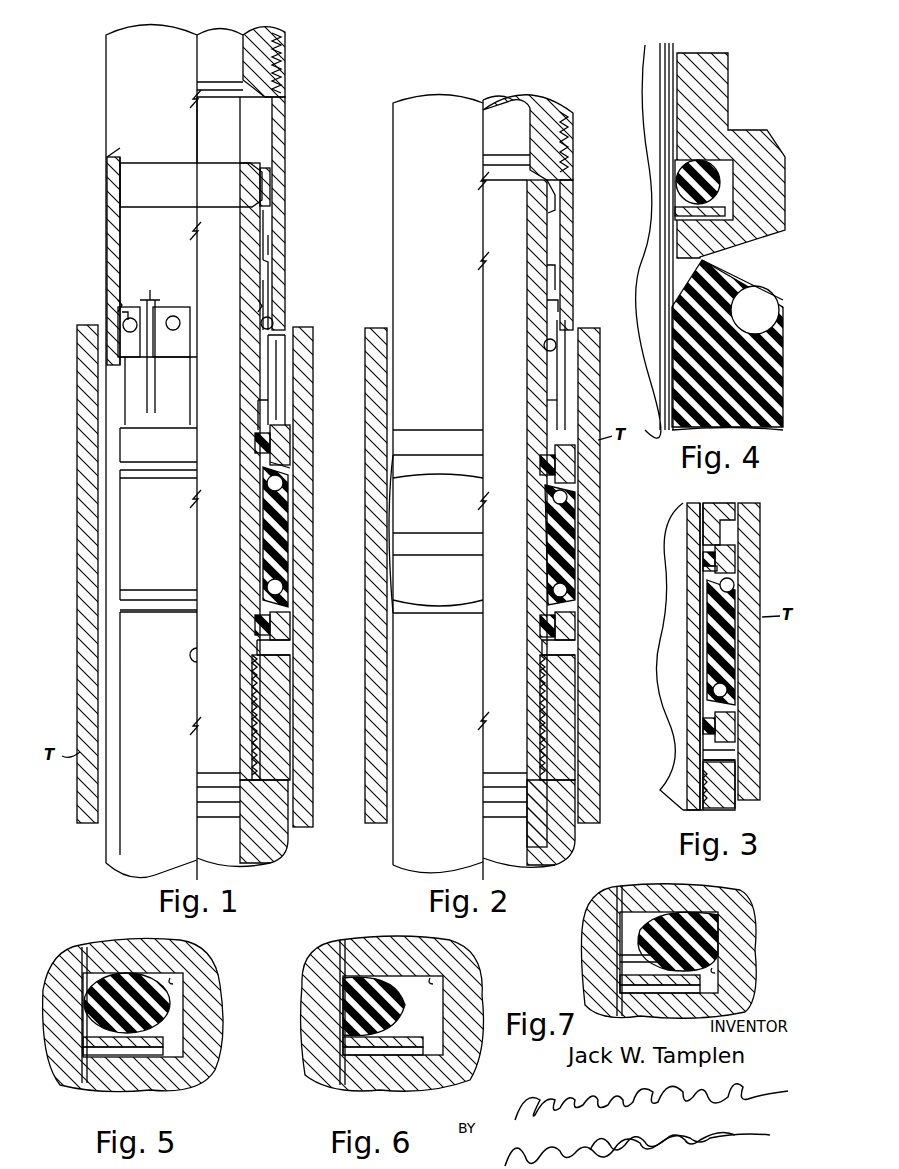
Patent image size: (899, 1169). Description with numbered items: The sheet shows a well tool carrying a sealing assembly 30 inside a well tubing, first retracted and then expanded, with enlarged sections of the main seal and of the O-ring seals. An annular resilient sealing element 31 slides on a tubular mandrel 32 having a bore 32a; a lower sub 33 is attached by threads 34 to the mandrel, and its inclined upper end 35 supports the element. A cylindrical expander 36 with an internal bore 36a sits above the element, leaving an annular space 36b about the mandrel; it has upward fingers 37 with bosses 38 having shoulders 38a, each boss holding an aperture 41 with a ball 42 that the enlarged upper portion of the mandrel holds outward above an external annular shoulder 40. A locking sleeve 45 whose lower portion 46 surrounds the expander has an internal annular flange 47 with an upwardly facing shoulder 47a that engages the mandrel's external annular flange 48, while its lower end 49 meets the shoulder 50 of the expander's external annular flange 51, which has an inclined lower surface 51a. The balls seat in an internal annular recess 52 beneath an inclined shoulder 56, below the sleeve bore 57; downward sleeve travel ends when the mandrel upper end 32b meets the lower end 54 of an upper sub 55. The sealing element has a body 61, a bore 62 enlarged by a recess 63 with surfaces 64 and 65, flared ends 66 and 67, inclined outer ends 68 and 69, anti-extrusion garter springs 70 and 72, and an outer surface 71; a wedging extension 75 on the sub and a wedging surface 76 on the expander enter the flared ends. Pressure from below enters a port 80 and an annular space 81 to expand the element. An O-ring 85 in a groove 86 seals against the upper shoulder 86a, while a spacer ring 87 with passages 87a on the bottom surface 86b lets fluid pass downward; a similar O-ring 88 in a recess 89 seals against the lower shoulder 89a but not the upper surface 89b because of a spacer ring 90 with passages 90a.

In FIG. 1, the sealing assembly 30 is at (70, 285).
In FIG. 2, the sealing element 31 is at (575, 530).
In FIG. 4, the sealing element 31 is at (770, 370).
In FIG. 3, the sealing element 31 is at (740, 648).
In FIG. 1, the tubular mandrel 32 is at (240, 551).
In FIG. 2, the tubular mandrel 32 is at (529, 523).
In FIG. 3, the tubular mandrel 32 is at (690, 600).
In FIG. 5, the tubular mandrel 32 is at (65, 958).
In FIG. 6, the tubular mandrel 32 is at (322, 950).
In FIG. 7, the tubular mandrel 32 is at (590, 926).
In FIG. 1, the bore 32a is at (230, 170).
In FIG. 1, the upper end of mandrel 32b is at (262, 150).
In FIG. 2, the upper end of mandrel 32b is at (505, 165).
In FIG. 2, the lower sub 33 is at (400, 846).
In FIG. 1, the threads 34 is at (262, 730).
In FIG. 2, the threads 34 is at (550, 730).
In FIG. 1, the upper end of lower sub 35 is at (290, 605).
In FIG. 2, the upper end of lower sub 35 is at (572, 610).
In FIG. 3, the upper end of lower sub 35 is at (735, 695).
In FIG. 1, the expander 36 is at (270, 410).
In FIG. 2, the expander 36 is at (572, 410).
In FIG. 4, the expander 36 is at (720, 70).
In FIG. 3, the expander 36 is at (719, 524).
In FIG. 1, the internal bore of expander 36a is at (278, 395).
In FIG. 4, the internal bore of expander 36a is at (677, 110).
In FIG. 1, the annular space 36b is at (150, 300).
In FIG. 4, the annular space 36b is at (677, 88).
In FIG. 3, the annular space 36b is at (701, 505).
In FIG. 5, the annular space 36b is at (86, 945).
In FIG. 6, the annular space 36b is at (344, 940).
In FIG. 7, the annular space 36b is at (622, 888).
In FIG. 1, the fingers 37 is at (125, 388).
In FIG. 1, the bosses 38 is at (118, 340).
In FIG. 1, the shoulders 38a is at (178, 358).
In FIG. 2, the shoulders 38a is at (572, 385).
In FIG. 1, the external annular shoulder 40 is at (290, 338).
In FIG. 1, the aperture 41 is at (270, 306).
In FIG. 1, the ball 42 is at (274, 320).
In FIG. 2, the ball 42 is at (544, 345).
In FIG. 1, the locking sleeve 45 is at (286, 212).
In FIG. 2, the locking sleeve 45 is at (398, 280).
In FIG. 1, the lower portion of locking sleeve 46 is at (118, 219).
In FIG. 1, the internal annular flange 47 is at (270, 224).
In FIG. 1, the upwardly facing shoulder 47a is at (268, 200).
In FIG. 2, the upwardly facing shoulder 47a is at (556, 280).
In FIG. 1, the external annular flange 48 is at (272, 172).
In FIG. 2, the external annular flange 48 is at (560, 190).
In FIG. 1, the lower end of locking sleeve 49 is at (282, 370).
In FIG. 2, the lower end of locking sleeve 49 is at (575, 438).
In FIG. 1, the upwardly facing shoulder 50 is at (280, 428).
In FIG. 4, the upwardly facing shoulder 50 is at (740, 132).
In FIG. 1, the external annular flange 51 is at (292, 440).
In FIG. 2, the external annular flange 51 is at (578, 462).
In FIG. 4, the external annular flange 51 is at (790, 160).
In FIG. 3, the external annular flange 51 is at (735, 540).
In FIG. 1, the lower surface of expander 51a is at (285, 462).
In FIG. 2, the lower surface of expander 51a is at (575, 488).
In FIG. 4, the lower surface of expander 51a is at (760, 240).
In FIG. 3, the lower surface of expander 51a is at (740, 578).
In FIG. 1, the internal annular recess 52 is at (118, 322).
In FIG. 1, the lower end of upper sub 54 is at (285, 96).
In FIG. 2, the lower end of upper sub 54 is at (483, 170).
In FIG. 1, the upper sub 55 is at (283, 60).
In FIG. 2, the upper sub 55 is at (573, 120).
In FIG. 1, the inclined shoulder 56 is at (112, 312).
In FIG. 2, the inclined shoulder 56 is at (560, 305).
In FIG. 1, the bore of locking sleeve 57 is at (268, 252).
In FIG. 1, the body 61 is at (327, 520).
In FIG. 1, the bore of sealing element 62 is at (258, 584).
In FIG. 2, the bore of sealing element 62 is at (540, 585).
In FIG. 1, the internal annular recess 63 is at (258, 530).
In FIG. 2, the internal annular recess 63 is at (545, 548).
In FIG. 1, the upper surface of recess 64 is at (258, 510).
In FIG. 4, the upper surface of recess 64 is at (675, 420).
In FIG. 1, the lower surface of recess 65 is at (260, 562).
In FIG. 1, the flared upper end of bore 66 is at (258, 484).
In FIG. 4, the flared upper end of bore 66 is at (700, 262).
In FIG. 1, the flared lower end of bore 67 is at (258, 600).
In FIG. 1, the inclined upper end 68 is at (290, 476).
In FIG. 4, the inclined upper end 68 is at (735, 265).
In FIG. 1, the inclined lower end 69 is at (284, 587).
In FIG. 1, the anti-extrusion element 70 is at (283, 485).
In FIG. 4, the anti-extrusion element 70 is at (772, 295).
In FIG. 3, the anti-extrusion element 70 is at (735, 587).
In FIG. 1, the outer surface 71 is at (290, 500).
In FIG. 1, the anti-extrusion element 72 is at (290, 575).
In FIG. 1, the wedging extension 75 is at (255, 618).
In FIG. 1, the wedging surface 76 is at (262, 472).
In FIG. 4, the wedging surface 76 is at (682, 272).
In FIG. 1, the lateral port 80 is at (280, 660).
In FIG. 2, the lateral port 80 is at (570, 660).
In FIG. 3, the lateral port 80 is at (720, 758).
In FIG. 1, the annular space 81 is at (255, 645).
In FIG. 2, the annular space 81 is at (540, 648).
In FIG. 1, the O-ring sealing ring 85 is at (250, 438).
In FIG. 2, the O-ring sealing ring 85 is at (538, 465).
In FIG. 4, the O-ring sealing ring 85 is at (675, 175).
In FIG. 3, the O-ring sealing ring 85 is at (700, 556).
In FIG. 5, the O-ring sealing ring 85 is at (165, 1000).
In FIG. 6, the O-ring sealing ring 85 is at (340, 985).
In FIG. 7, the O-ring sealing ring 85 is at (700, 935).
In FIG. 4, the internal annular groove 86 is at (700, 211).
In FIG. 3, the internal annular groove 86 is at (720, 565).
In FIG. 5, the internal annular groove 86 is at (175, 1025).
In FIG. 6, the internal annular groove 86 is at (428, 1010).
In FIG. 7, the internal annular groove 86 is at (715, 970).
In FIG. 3, the upper shoulder of groove 86a is at (725, 550).
In FIG. 5, the upper shoulder of groove 86a is at (173, 982).
In FIG. 6, the upper shoulder of groove 86a is at (432, 982).
In FIG. 7, the upper shoulder of groove 86a is at (715, 915).
In FIG. 5, the lower surface of groove 86b is at (85, 1065).
In FIG. 6, the lower surface of groove 86b is at (343, 1058).
In FIG. 7, the lower surface of groove 86b is at (700, 988).
In FIG. 3, the spacer ring 87 is at (702, 568).
In FIG. 5, the spacer ring 87 is at (160, 1042).
In FIG. 6, the spacer ring 87 is at (343, 1040).
In FIG. 7, the spacer ring 87 is at (700, 980).
In FIG. 5, the flow passages 87a is at (160, 1051).
In FIG. 6, the flow passages 87a is at (425, 1050).
In FIG. 3, the O-ring sealing element 88 is at (700, 730).
In FIG. 3, the internal annular recess 89 is at (736, 722).
In FIG. 3, the lower sealing shoulder 89a is at (736, 738).
In FIG. 3, the upper surface of recess 89b is at (735, 712).
In FIG. 3, the spacer ring 90 is at (703, 718).
In FIG. 1, the radial passages 90a is at (290, 622).